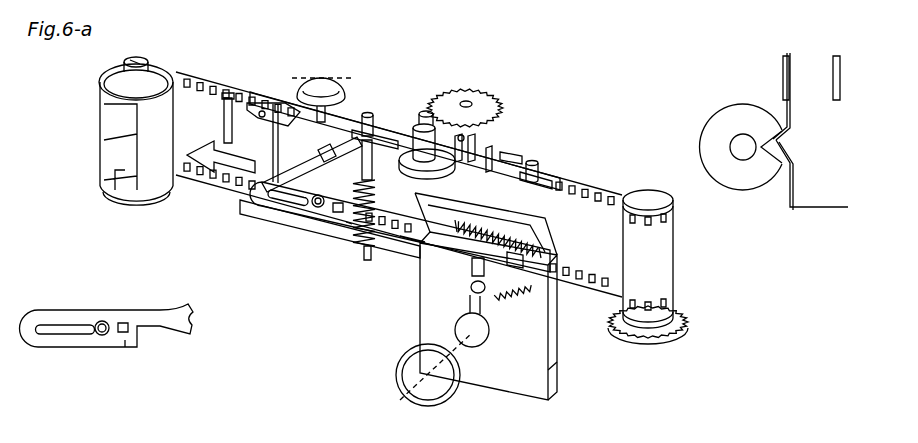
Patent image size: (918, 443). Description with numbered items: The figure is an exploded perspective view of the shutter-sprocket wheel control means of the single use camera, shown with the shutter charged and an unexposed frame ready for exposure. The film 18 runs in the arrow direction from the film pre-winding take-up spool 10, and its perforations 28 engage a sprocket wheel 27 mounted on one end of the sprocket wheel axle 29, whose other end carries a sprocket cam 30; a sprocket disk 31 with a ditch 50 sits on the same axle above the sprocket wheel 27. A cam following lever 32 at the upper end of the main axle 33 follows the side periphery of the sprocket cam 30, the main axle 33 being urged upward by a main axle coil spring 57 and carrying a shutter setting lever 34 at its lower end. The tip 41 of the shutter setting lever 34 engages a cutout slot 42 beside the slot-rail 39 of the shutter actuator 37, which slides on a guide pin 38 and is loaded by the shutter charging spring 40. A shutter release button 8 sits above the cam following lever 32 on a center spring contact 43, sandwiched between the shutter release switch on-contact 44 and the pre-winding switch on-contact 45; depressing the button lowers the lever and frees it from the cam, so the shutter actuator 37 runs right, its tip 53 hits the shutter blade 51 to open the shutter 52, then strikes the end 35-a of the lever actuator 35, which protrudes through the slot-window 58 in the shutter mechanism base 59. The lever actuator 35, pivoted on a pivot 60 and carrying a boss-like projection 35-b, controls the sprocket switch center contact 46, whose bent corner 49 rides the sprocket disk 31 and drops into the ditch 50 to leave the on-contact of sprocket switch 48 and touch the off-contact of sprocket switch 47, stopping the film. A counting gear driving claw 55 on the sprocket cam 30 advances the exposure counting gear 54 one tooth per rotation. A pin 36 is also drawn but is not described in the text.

The shutter release button 8 is at (321, 82).
The film pre-winding take-up spool 10 is at (655, 337).
The film 18 is at (626, 193).
The sprocket wheel 27 is at (394, 250).
The perforations 28 is at (535, 166).
The sprocket wheel axle 29 is at (464, 135).
The sprocket cam 30 is at (417, 118).
The sprocket disk 31 is at (410, 238).
The cam following lever 32 is at (370, 122).
The main axle 33 is at (356, 257).
The shutter setting lever 34 is at (356, 250).
The lever actuator 35 is at (592, 212).
The end of lever actuator 35-a is at (510, 265).
The projection 35-b is at (432, 175).
The pin 36 is at (231, 94).
The shutter actuator 37 is at (440, 237).
The guide pin 38 is at (313, 207).
The slot-rail 39 is at (288, 208).
The shutter charging spring 40 is at (562, 285).
The tip of shutter setting lever 41 is at (335, 215).
The cutout slot 42 is at (348, 232).
The center spring contact 43 is at (285, 108).
The shutter release switch on-contact 44 is at (292, 175).
The pre-winding switch on-contact 45 is at (300, 203).
The sprocket switch center contact 46 is at (508, 157).
The off-contact of sprocket switch 47 is at (474, 143).
The on-contact of sprocket switch 48 is at (491, 158).
The bent corner 49 is at (445, 166).
The ditch 50 is at (432, 163).
The shutter blade 51 is at (477, 267).
The shutter 52 is at (482, 328).
The tip of shutter actuator 53 is at (480, 260).
The exposure counting gear 54 is at (476, 97).
The counting gear driving claw 55 is at (426, 111).
The main axle coil spring 57 is at (367, 262).
The slot-window 58 is at (541, 266).
The shutter mechanism base 59 is at (552, 380).
The pivot 60 is at (548, 177).